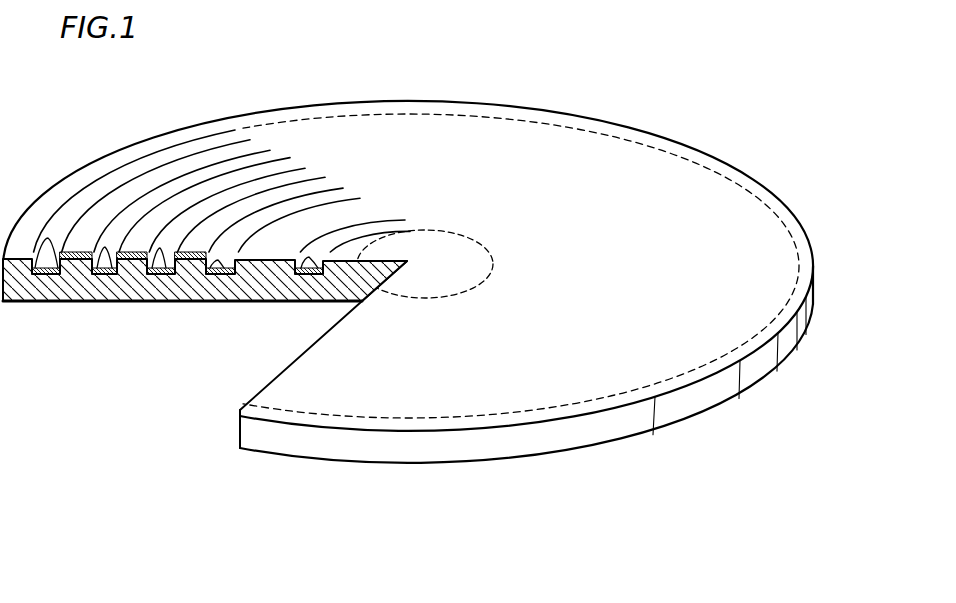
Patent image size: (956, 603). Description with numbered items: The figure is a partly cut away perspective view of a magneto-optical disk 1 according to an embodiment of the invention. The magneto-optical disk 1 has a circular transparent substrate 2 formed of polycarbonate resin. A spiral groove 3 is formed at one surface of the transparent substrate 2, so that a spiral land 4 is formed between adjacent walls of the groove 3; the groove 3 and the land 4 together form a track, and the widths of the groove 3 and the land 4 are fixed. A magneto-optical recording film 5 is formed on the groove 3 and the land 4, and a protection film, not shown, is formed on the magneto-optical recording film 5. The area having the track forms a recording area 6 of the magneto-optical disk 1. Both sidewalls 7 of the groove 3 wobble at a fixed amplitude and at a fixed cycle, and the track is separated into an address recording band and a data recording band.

The magneto-optical disk 1 is at (386, 507).
The transparent substrate 2 is at (73, 272).
The groove 3 is at (34, 274).
The land 4 is at (210, 212).
The magneto-optical recording film 5 is at (194, 256).
The recording area 6 is at (546, 150).
The sidewalls 7 is at (48, 268).